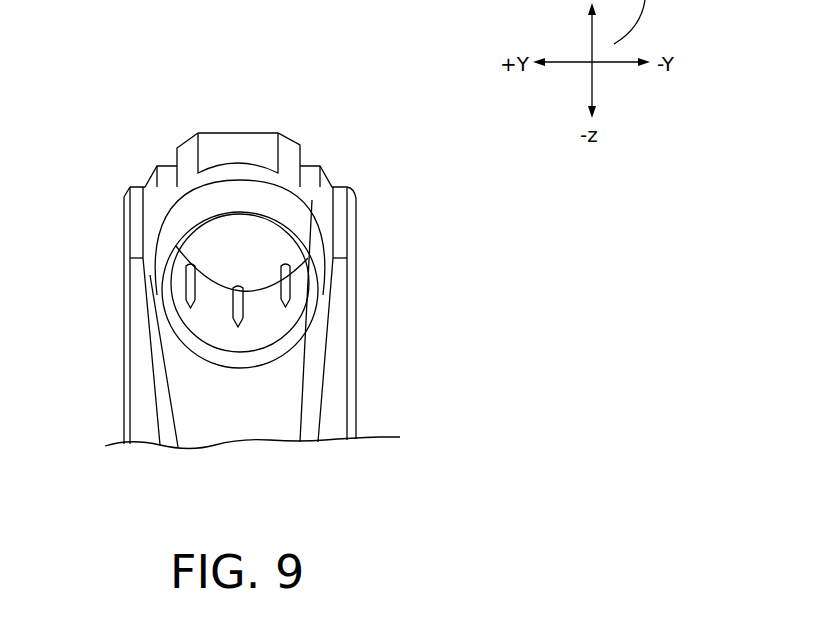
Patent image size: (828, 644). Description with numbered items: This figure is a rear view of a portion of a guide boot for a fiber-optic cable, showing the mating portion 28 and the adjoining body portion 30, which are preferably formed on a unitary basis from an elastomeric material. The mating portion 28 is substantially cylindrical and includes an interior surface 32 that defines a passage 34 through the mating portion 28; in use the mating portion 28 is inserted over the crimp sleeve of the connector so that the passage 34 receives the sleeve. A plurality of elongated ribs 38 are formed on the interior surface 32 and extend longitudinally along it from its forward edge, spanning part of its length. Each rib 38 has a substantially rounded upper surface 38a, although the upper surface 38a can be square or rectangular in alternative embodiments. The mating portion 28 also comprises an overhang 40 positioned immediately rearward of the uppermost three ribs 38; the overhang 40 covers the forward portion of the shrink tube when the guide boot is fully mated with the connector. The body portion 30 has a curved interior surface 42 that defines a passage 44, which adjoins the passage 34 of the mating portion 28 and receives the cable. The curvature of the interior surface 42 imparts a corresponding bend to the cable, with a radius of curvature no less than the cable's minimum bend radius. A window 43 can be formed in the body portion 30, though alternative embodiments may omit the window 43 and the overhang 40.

The mating portion 28 is at (379, 197).
The body portion 30 is at (380, 420).
The interior surface 32 is at (272, 303).
The passage 34 is at (243, 238).
The ribs 38 is at (272, 333).
The upper surface 38a is at (176, 252).
The overhang 40 is at (200, 218).
The interior surface 42 is at (253, 432).
The window 43 is at (315, 400).
The passage 44 is at (290, 376).